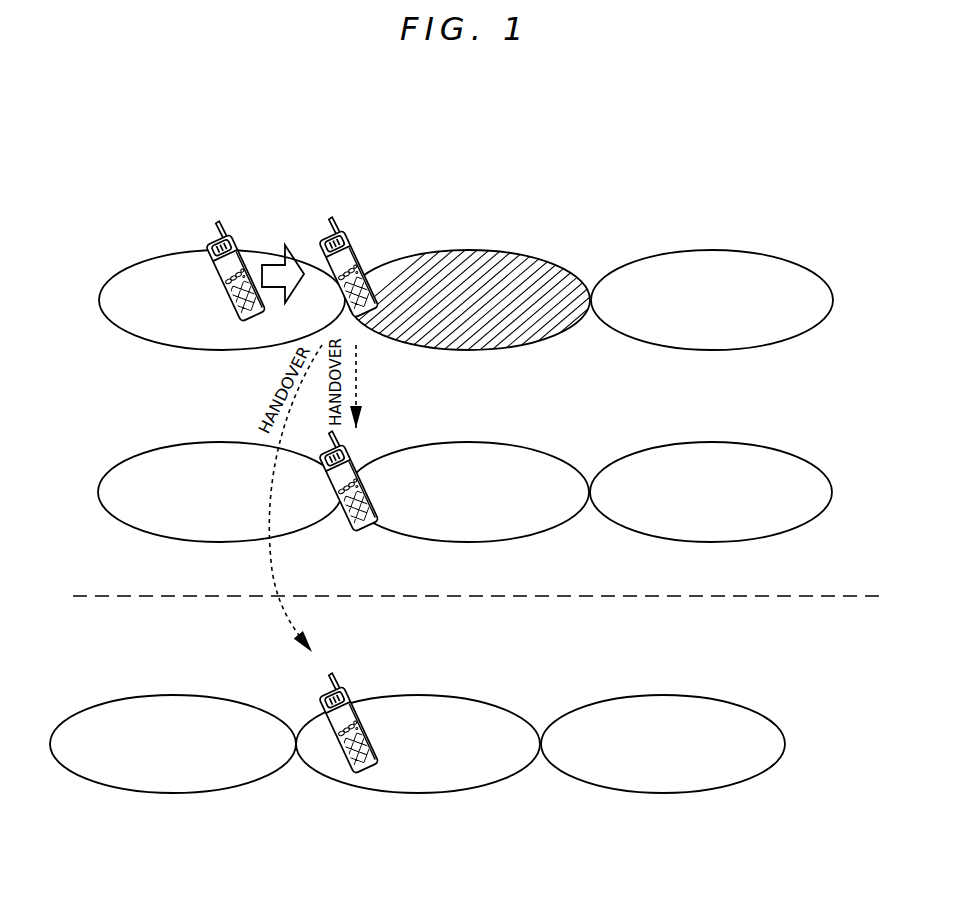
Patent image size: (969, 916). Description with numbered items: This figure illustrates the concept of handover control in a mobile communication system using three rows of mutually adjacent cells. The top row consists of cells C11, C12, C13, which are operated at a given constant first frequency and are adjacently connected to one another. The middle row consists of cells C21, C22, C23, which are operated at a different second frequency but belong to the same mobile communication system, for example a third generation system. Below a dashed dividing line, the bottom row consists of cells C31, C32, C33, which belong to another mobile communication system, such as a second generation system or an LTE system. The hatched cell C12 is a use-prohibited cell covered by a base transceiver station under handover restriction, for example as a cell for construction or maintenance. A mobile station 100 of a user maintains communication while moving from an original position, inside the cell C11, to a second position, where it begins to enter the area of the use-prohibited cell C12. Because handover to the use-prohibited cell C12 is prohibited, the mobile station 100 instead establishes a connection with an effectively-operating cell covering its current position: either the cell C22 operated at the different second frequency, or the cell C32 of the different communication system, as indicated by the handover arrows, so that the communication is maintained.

The cell C11 is at (169, 251).
The use-prohibited cell C12 is at (499, 252).
The cell C13 is at (783, 255).
The cell C21 is at (180, 442).
The cell C22 is at (510, 445).
The cell C23 is at (783, 446).
The cell C31 is at (88, 700).
The cell C32 is at (440, 695).
The cell C33 is at (708, 700).
The mobile station 100 is at (233, 248).